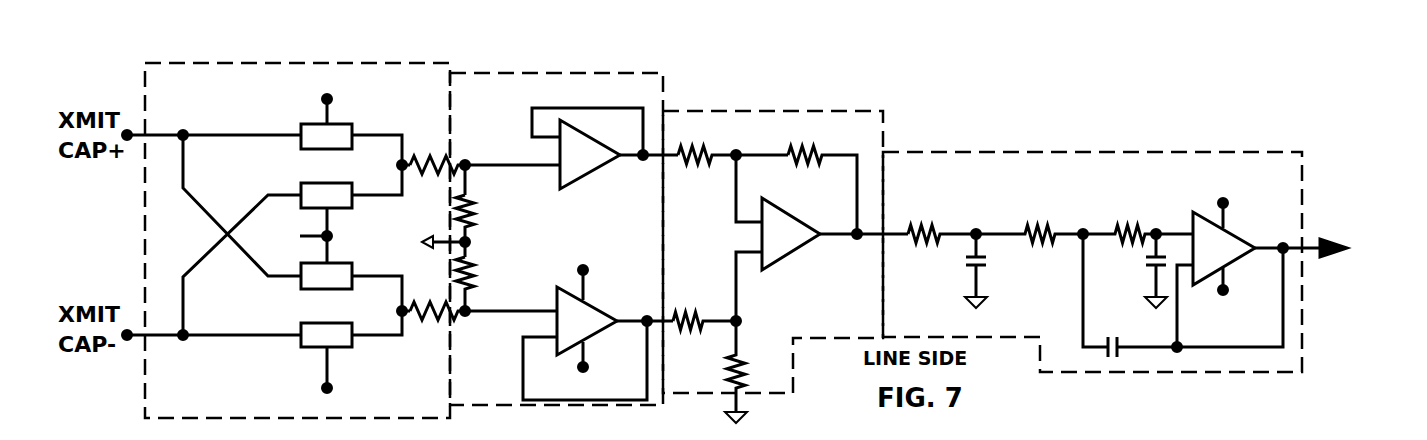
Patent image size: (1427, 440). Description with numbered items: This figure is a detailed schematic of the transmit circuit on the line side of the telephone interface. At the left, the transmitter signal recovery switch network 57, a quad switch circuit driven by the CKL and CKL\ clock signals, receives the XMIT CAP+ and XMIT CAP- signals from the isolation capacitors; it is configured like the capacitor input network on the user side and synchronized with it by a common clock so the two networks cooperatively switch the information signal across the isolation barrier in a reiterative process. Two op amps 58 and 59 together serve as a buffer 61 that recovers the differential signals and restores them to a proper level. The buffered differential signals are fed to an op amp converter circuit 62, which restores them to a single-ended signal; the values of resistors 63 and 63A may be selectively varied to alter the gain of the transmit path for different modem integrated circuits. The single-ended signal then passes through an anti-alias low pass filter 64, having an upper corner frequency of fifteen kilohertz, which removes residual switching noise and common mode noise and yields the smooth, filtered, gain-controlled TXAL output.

The transmitter signal recovery switch network 57 is at (250, 181).
The op amp 58 is at (577, 318).
The op amp 59 is at (577, 158).
The buffer 61 is at (564, 239).
The op amp converter circuit 62 is at (804, 265).
The resistor 63 is at (813, 147).
The resistor 63A is at (743, 380).
The anti-alias low pass filter 64 is at (1042, 190).